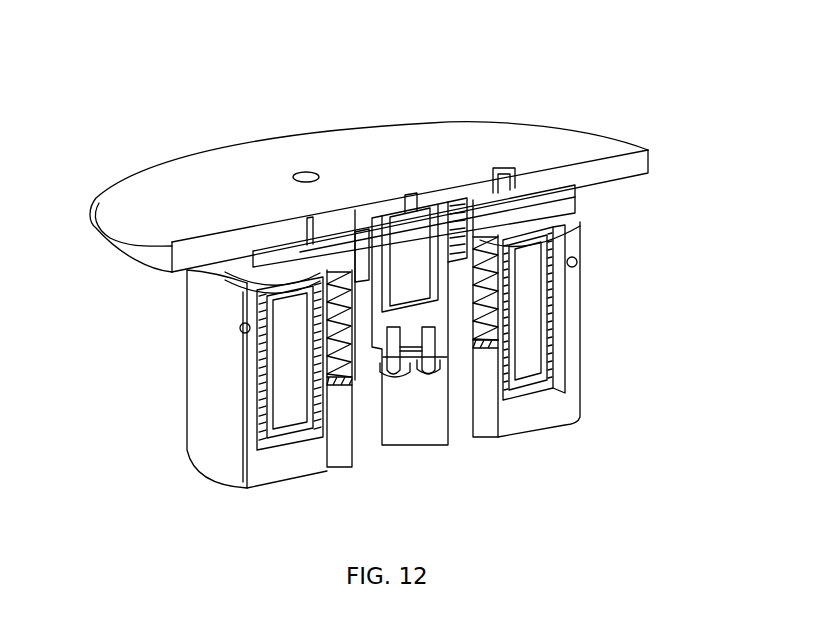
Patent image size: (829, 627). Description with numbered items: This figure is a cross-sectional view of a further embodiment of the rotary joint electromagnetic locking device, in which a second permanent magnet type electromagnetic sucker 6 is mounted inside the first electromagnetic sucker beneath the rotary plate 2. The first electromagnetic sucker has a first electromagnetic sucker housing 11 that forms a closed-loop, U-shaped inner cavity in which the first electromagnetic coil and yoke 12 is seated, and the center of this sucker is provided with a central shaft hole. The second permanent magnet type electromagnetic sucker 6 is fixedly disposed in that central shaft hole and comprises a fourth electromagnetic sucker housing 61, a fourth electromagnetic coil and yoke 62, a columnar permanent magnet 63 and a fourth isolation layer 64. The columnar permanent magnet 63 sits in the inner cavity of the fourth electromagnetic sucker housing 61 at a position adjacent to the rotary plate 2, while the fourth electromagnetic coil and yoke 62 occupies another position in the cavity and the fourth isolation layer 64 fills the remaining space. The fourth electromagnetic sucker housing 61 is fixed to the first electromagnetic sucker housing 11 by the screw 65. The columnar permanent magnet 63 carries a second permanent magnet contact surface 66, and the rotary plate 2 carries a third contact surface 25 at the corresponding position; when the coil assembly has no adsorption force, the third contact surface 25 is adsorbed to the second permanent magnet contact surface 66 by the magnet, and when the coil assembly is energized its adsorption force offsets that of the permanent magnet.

The rotary plate 2 is at (137, 220).
The third contact surface 25 is at (383, 206).
The second permanent magnet contact surface 66 is at (403, 203).
The columnar permanent magnet 63 is at (432, 205).
The fourth electromagnetic coil and yoke 62 is at (577, 216).
The fourth electromagnetic sucker housing 61 is at (573, 275).
The first electromagnetic coil and yoke 12 is at (543, 365).
The fourth isolation layer 64 is at (250, 295).
The second permanent magnet type electromagnetic sucker 6 is at (303, 357).
The first electromagnetic sucker housing 11 is at (187, 437).
The screw 65 is at (400, 370).